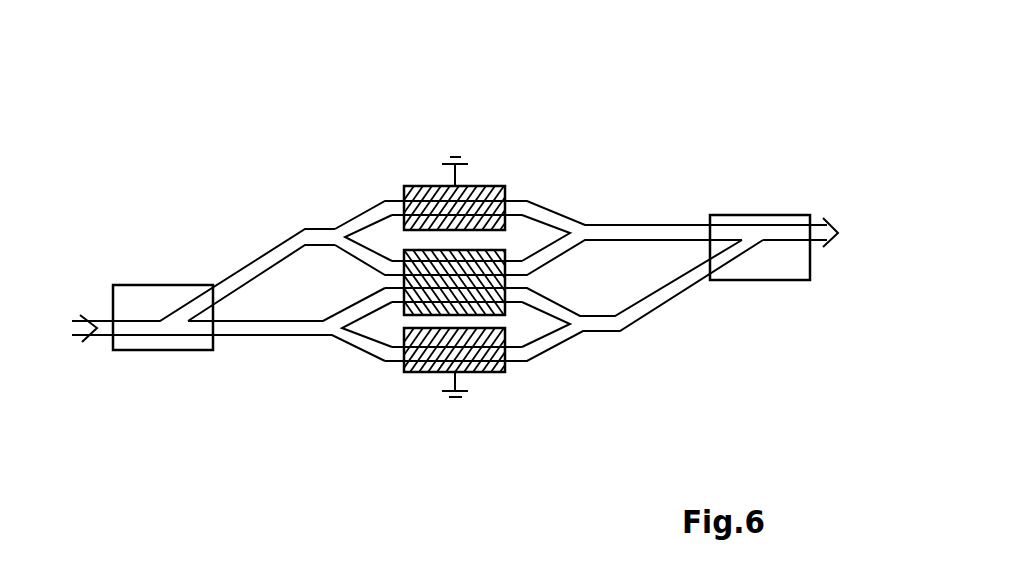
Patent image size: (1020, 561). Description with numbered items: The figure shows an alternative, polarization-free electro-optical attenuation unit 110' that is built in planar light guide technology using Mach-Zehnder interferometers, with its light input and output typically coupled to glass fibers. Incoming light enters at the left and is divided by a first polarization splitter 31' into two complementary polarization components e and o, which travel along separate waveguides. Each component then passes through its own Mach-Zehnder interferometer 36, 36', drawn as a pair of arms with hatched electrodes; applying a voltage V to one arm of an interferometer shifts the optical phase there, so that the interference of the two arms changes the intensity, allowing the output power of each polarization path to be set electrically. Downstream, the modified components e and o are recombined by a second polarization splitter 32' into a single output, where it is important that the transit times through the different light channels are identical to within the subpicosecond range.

The electro-optical attenuation unit 110' is at (460, 237).
The first polarization splitter 31' is at (138, 250).
The second polarization splitter 32' is at (792, 192).
The Mach-Zehnder interferometer 36 is at (497, 156).
The Mach-Zehnder interferometer 36' is at (500, 392).
The polarization component e is at (268, 260).
The polarization component o is at (265, 330).
The drive voltage V is at (479, 250).